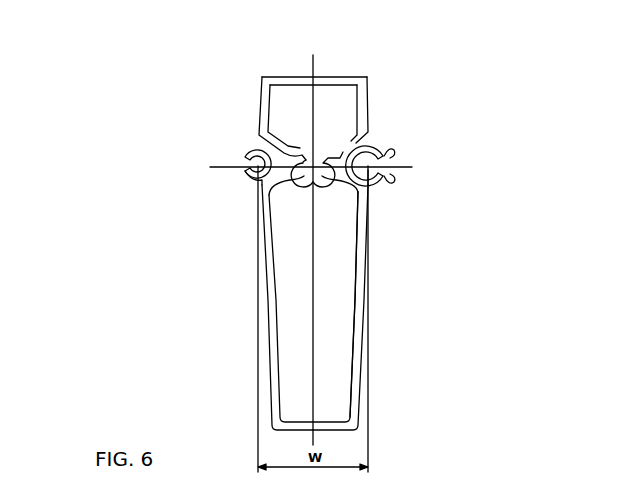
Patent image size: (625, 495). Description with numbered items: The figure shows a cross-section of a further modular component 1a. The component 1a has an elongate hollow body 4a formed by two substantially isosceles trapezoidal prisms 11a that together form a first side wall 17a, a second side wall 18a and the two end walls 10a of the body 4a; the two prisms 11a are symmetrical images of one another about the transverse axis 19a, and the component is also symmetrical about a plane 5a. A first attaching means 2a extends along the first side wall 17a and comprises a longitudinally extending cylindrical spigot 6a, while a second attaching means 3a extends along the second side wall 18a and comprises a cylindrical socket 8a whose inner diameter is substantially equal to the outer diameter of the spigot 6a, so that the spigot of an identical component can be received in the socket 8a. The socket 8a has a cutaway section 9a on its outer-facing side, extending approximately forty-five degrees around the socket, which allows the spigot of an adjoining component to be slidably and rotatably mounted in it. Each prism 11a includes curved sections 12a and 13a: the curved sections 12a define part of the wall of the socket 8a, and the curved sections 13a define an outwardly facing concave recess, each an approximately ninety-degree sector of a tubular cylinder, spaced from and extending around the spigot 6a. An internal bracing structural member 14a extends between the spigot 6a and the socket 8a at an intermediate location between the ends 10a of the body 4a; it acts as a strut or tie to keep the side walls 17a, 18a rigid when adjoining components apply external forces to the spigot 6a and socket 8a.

The modular component 1a is at (380, 103).
The first attaching means 2a is at (250, 176).
The second attaching means 3a is at (393, 145).
The body 4a is at (372, 240).
The plane 5a is at (312, 102).
The spigot 6a is at (240, 153).
The socket 8a is at (390, 185).
The cutaway section 9a is at (397, 160).
The end wall 10a is at (332, 77).
The isosceles trapezoidal prism 11a is at (267, 245).
The curved section 12a is at (352, 183).
The curved section 13a is at (261, 135).
The structural member 14a is at (303, 180).
The first side wall 17a is at (262, 102).
The second side wall 18a is at (358, 308).
The transverse axis 19a is at (240, 170).